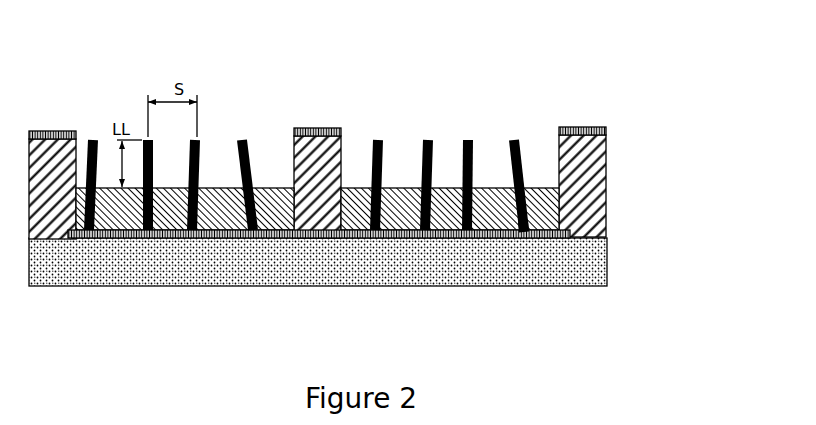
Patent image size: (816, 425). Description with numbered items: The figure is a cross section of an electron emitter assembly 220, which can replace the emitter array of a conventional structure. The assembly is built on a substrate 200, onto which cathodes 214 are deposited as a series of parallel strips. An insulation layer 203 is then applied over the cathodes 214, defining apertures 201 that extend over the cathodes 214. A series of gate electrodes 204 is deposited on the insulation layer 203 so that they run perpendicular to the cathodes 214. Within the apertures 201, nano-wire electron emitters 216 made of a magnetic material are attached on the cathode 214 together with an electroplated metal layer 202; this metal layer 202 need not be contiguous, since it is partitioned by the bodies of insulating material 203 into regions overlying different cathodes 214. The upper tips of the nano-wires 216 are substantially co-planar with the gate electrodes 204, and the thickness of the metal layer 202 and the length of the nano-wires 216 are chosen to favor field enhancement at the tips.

The substrate 200 is at (275, 265).
The apertures 201 is at (290, 83).
The metal layer 202 is at (397, 190).
The insulation layer 203 is at (604, 210).
The gate electrode 204 is at (594, 120).
The cathode 214 is at (597, 287).
The nano-wire electron emitters 216 is at (519, 132).
The electron emitter assembly 220 is at (401, 178).